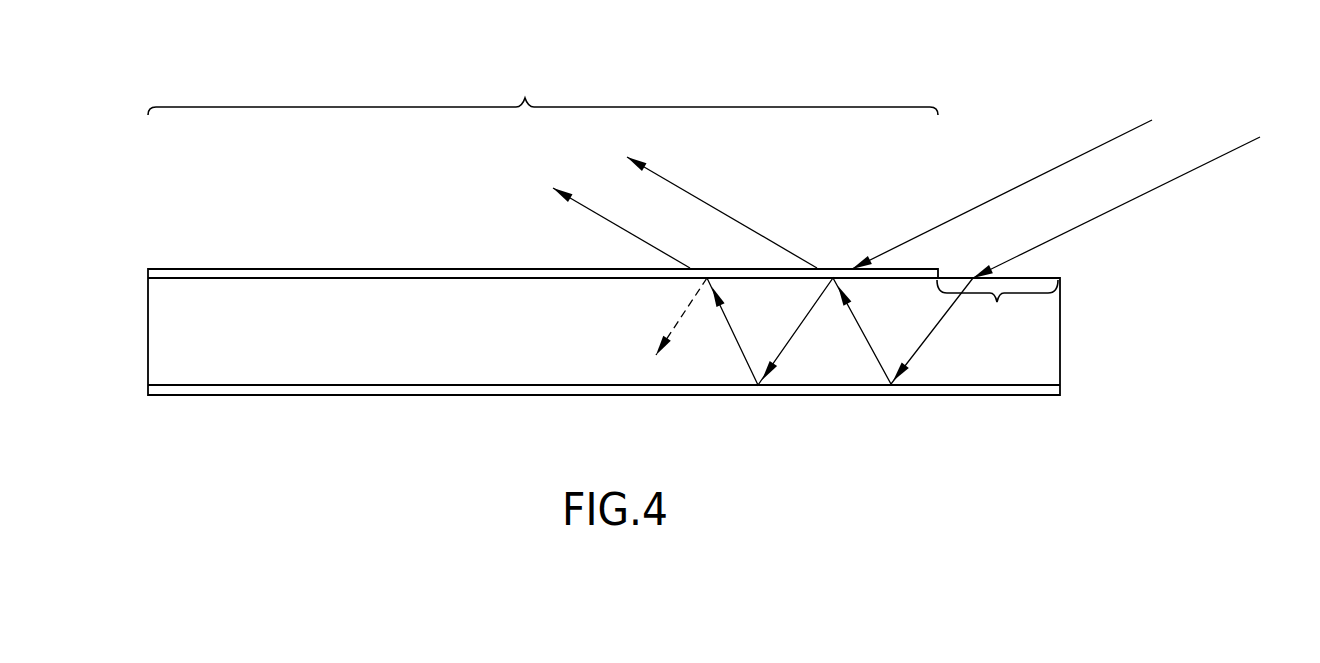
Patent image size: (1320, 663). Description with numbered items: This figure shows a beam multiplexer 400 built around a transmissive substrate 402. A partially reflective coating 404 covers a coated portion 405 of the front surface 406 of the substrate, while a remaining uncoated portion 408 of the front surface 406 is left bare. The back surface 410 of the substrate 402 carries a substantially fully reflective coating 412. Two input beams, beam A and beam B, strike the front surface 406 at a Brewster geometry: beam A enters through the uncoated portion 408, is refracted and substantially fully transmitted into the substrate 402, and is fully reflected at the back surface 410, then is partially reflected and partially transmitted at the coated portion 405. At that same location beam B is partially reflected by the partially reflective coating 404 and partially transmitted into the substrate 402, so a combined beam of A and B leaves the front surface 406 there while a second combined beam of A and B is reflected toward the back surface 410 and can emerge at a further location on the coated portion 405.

The beam multiplexer 400 is at (962, 128).
The transmissive substrate 402 is at (1047, 340).
The partially reflective coating 404 is at (396, 267).
The coated portion of the front surface 405 is at (543, 91).
The front surface 406 is at (468, 280).
The uncoated portion of the front surface 408 is at (997, 308).
The back surface 410 is at (522, 370).
The substantially fully reflective coating 412 is at (564, 397).